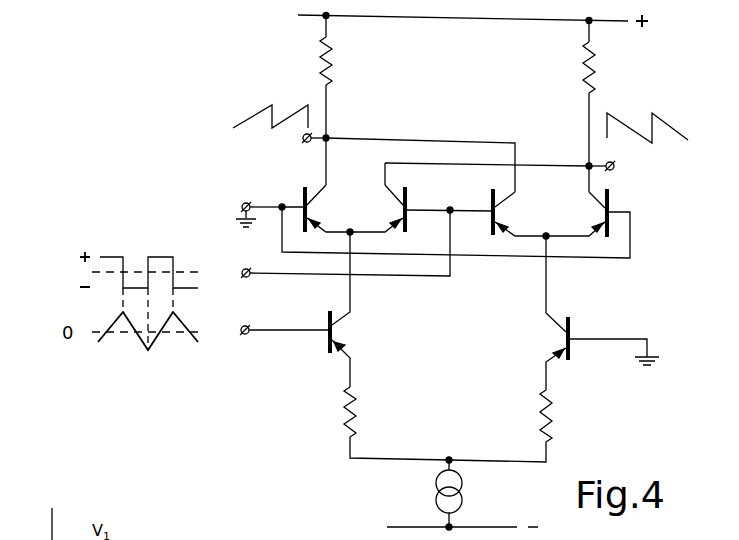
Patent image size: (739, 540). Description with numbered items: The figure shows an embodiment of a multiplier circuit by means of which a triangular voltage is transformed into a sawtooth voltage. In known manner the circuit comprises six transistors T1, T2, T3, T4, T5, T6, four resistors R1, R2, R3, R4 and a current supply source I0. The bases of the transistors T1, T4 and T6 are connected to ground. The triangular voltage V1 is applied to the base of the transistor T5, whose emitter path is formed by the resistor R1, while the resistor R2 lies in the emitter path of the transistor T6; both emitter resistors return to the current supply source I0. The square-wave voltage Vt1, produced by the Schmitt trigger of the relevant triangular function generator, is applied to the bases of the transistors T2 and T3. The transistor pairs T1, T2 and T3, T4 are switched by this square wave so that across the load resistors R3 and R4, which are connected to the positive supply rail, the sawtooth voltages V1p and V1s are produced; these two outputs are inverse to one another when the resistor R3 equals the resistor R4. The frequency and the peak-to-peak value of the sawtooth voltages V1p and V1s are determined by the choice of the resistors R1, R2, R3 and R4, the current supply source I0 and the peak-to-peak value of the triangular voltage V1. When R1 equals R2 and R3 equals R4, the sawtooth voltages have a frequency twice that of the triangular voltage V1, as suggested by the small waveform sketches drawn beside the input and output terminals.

The resistor R1 is at (358, 405).
The resistor R2 is at (540, 413).
The resistor R3 is at (342, 77).
The resistor R4 is at (576, 70).
The transistor T1 is at (315, 208).
The transistor T2 is at (397, 212).
The transistor T3 is at (503, 214).
The transistor T4 is at (600, 213).
The transistor T5 is at (338, 333).
The transistor T6 is at (558, 338).
The current supply source I0 is at (468, 475).
The triangular voltage V1 is at (284, 345).
The square-wave voltage Vt1 is at (250, 287).
The sawtooth voltage V1p is at (267, 110).
The sawtooth voltage V1s is at (652, 119).